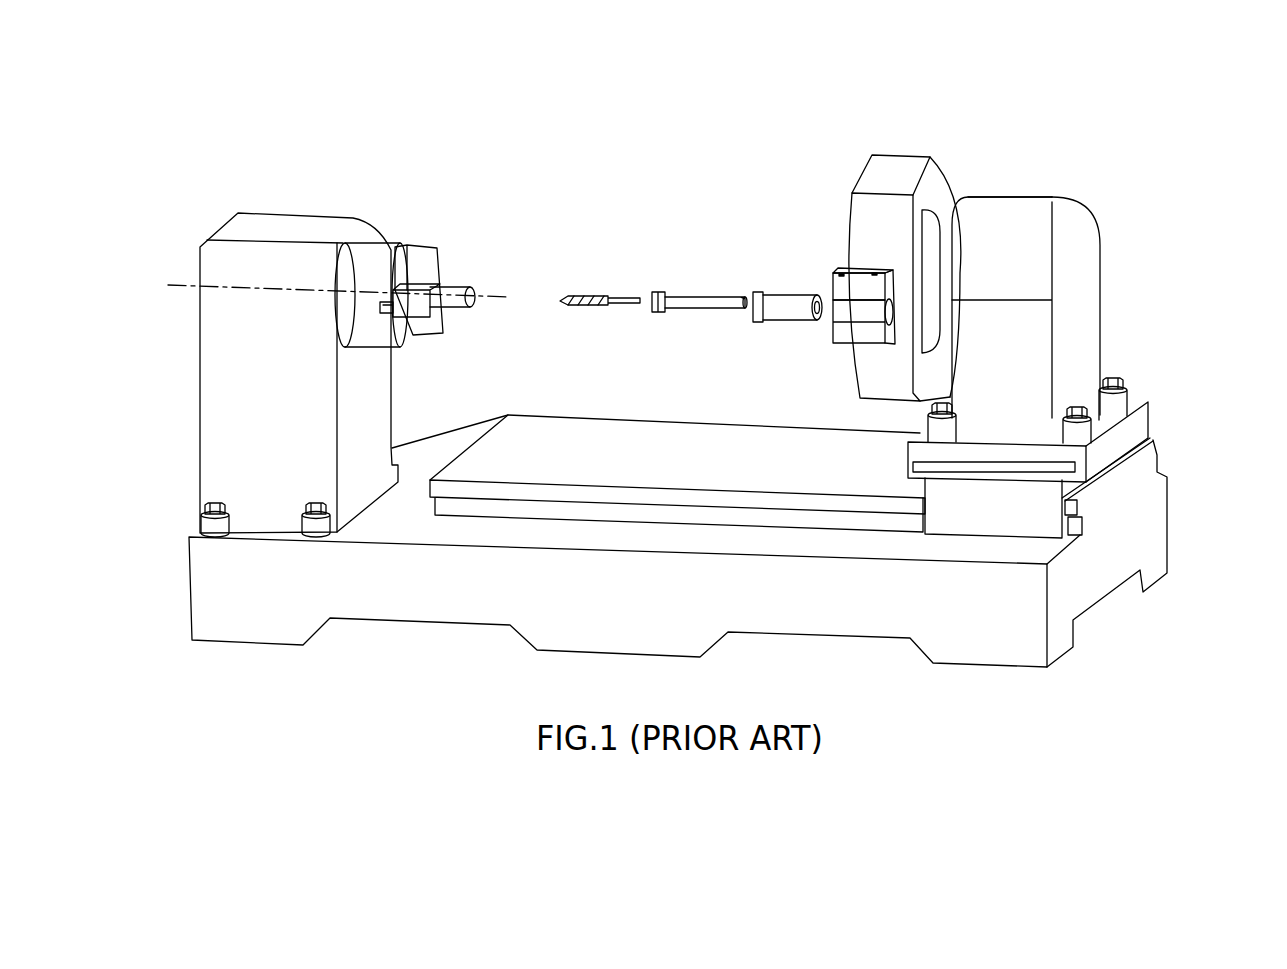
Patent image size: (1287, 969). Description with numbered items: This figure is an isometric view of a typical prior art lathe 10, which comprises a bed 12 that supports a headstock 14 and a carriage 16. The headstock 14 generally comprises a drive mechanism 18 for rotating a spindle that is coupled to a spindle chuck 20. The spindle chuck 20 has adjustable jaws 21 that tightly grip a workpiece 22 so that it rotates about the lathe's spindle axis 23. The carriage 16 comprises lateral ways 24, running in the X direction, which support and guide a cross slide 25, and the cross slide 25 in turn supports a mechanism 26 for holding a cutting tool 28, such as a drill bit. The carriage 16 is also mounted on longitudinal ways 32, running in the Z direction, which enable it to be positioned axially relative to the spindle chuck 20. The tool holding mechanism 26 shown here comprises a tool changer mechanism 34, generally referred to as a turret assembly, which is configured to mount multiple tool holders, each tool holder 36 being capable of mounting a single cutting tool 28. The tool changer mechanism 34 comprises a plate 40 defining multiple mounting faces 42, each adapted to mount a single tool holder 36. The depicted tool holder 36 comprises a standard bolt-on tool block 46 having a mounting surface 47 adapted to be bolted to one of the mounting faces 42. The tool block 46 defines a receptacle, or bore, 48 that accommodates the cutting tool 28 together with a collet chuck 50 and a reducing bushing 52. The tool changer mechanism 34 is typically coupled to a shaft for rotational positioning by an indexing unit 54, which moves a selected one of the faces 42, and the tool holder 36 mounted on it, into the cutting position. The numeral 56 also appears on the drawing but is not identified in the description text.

The lathe 10 is at (535, 107).
The bed 12 is at (207, 633).
The headstock 14 is at (205, 361).
The carriage 16 is at (1018, 513).
The drive mechanism 18 is at (139, 465).
The spindle chuck 20 is at (384, 246).
The adjustable jaws 21 is at (430, 245).
The workpiece 22 is at (462, 286).
The spindle axis 23 is at (177, 285).
The lateral (X) ways 24 is at (1080, 418).
The cross slide 25 is at (1137, 430).
The tool holding mechanism 26 is at (1064, 275).
The cutting tool 28 is at (592, 296).
The longitudinal (Z) ways 32 is at (647, 418).
The tool changer mechanism 34 is at (883, 266).
The tool holder 36 is at (943, 295).
The plate 40 is at (938, 170).
The mounting faces 42 is at (895, 162).
The tool block 46 is at (833, 341).
The mounting surface 47 is at (858, 268).
The bore 48 is at (890, 308).
The collet chuck 50 is at (683, 296).
The reducing bushing 52 is at (778, 322).
The indexing unit 54 is at (1017, 195).
The tailstock rounded portion 56 is at (1105, 207).